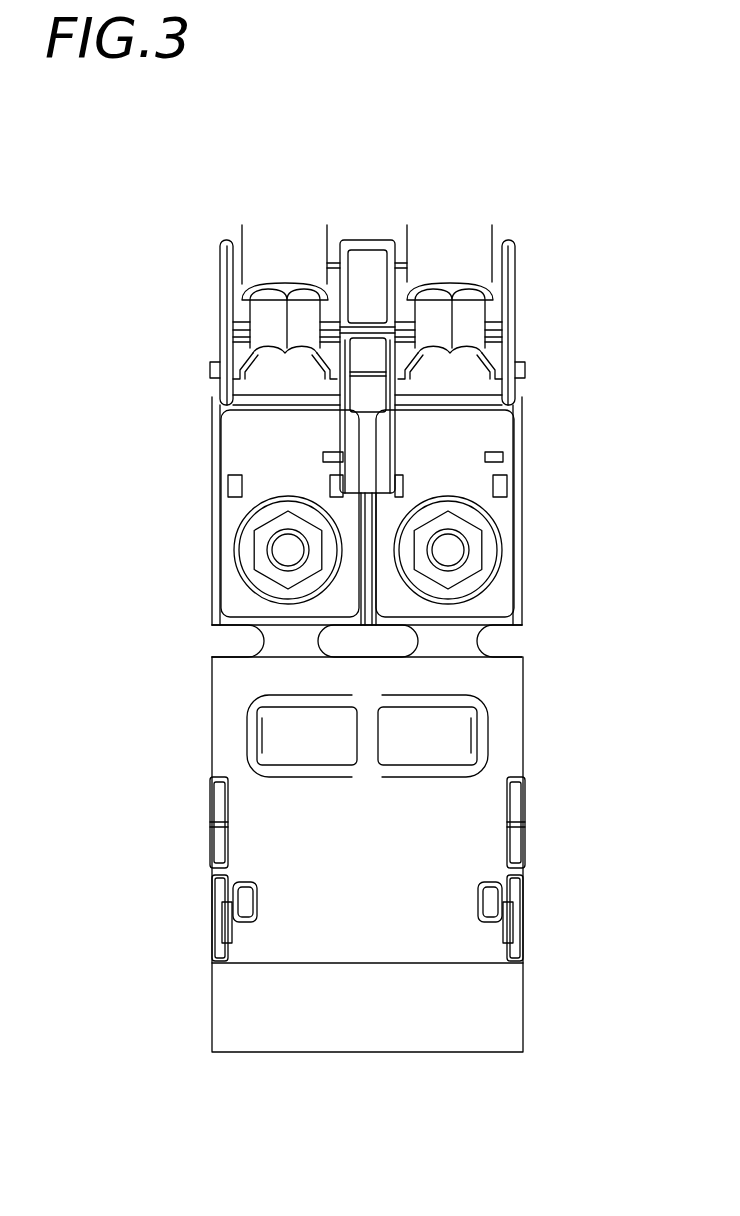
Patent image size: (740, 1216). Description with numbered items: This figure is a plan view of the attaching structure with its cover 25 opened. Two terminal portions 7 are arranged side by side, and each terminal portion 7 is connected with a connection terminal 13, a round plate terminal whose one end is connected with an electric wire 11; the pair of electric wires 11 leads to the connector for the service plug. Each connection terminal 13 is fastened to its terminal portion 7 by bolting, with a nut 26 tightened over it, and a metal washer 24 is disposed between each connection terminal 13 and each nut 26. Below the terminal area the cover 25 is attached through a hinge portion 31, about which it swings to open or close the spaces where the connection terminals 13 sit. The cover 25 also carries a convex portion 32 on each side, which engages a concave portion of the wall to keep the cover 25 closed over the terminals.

The electric wire 11 is at (280, 257).
The connection terminal 13 is at (263, 410).
The terminal portion 7 is at (288, 540).
The nut 26 is at (253, 548).
The metal washer 24 is at (235, 568).
The hinge portion 31 is at (455, 647).
The cover 25 is at (267, 828).
The convex portion 32 is at (243, 902).